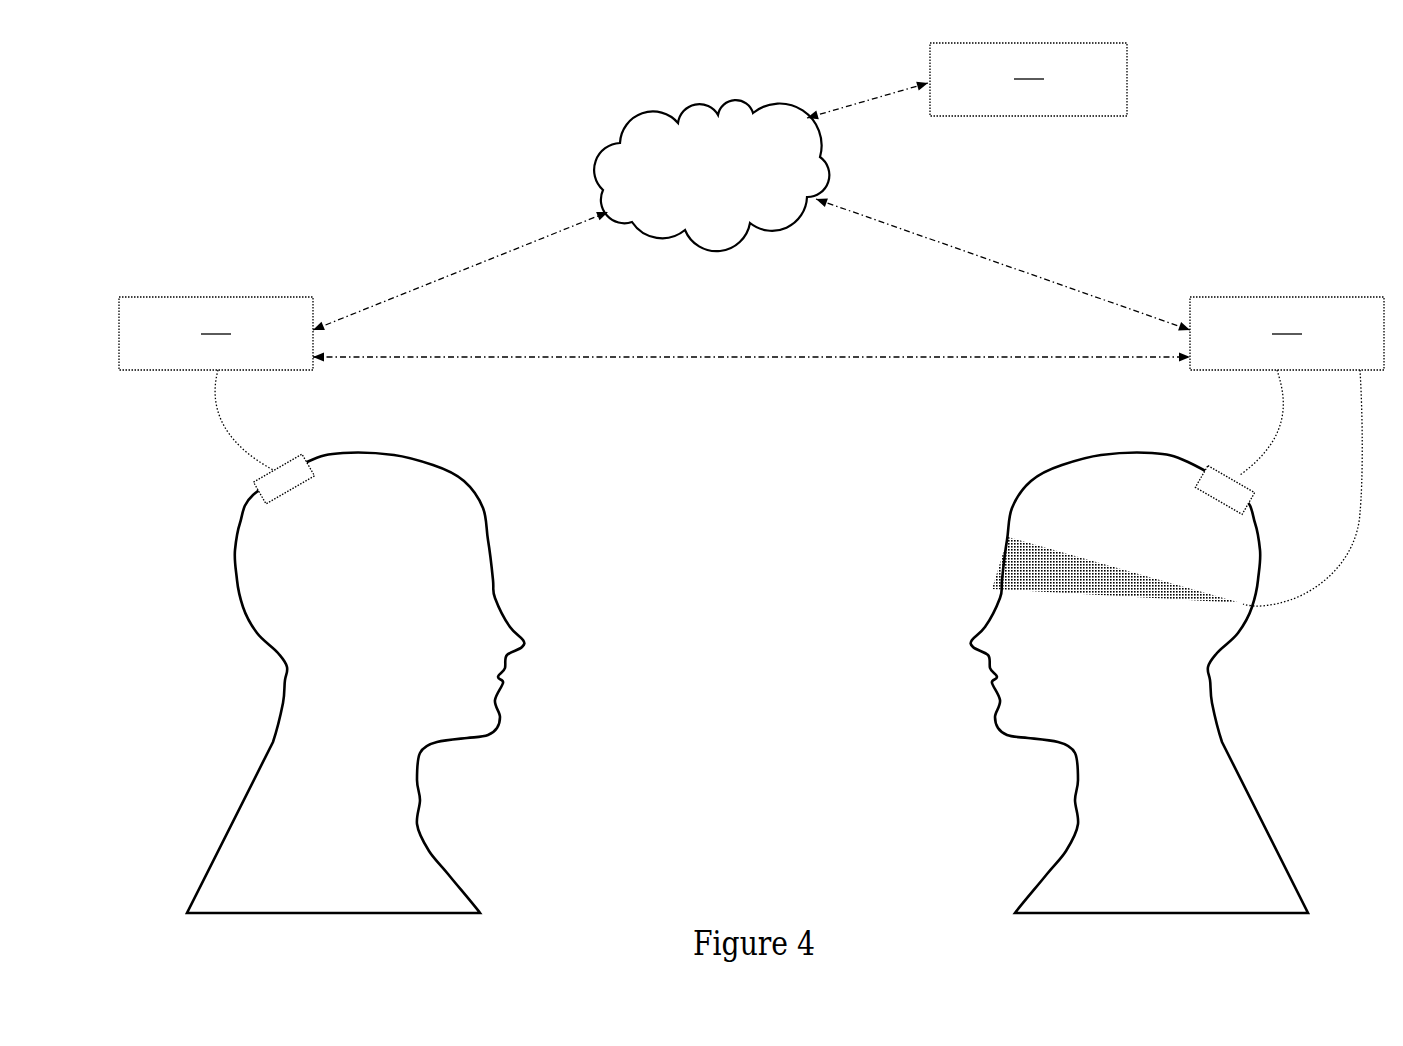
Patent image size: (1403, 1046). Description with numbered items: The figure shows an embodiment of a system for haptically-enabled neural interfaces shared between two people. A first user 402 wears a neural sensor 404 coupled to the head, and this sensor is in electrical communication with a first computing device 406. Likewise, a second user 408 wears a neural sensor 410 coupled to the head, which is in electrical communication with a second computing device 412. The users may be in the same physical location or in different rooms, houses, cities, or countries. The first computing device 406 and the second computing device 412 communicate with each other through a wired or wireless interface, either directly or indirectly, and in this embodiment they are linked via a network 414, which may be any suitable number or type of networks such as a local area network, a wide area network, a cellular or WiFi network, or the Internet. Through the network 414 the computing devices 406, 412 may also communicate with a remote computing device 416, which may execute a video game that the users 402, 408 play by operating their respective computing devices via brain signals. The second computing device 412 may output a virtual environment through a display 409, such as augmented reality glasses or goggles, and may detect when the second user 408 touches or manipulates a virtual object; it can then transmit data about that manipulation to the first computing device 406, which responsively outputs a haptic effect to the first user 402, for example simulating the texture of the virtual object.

The first user 402 is at (276, 834).
The neural sensor 404 is at (241, 489).
The first computing device 406 is at (216, 384).
The second user 408 is at (1236, 834).
The display 409 is at (998, 528).
The neural sensor 410 is at (1265, 493).
The second computing device 412 is at (1287, 451).
The network 414 is at (763, 181).
The computing device 416 is at (1028, 79).